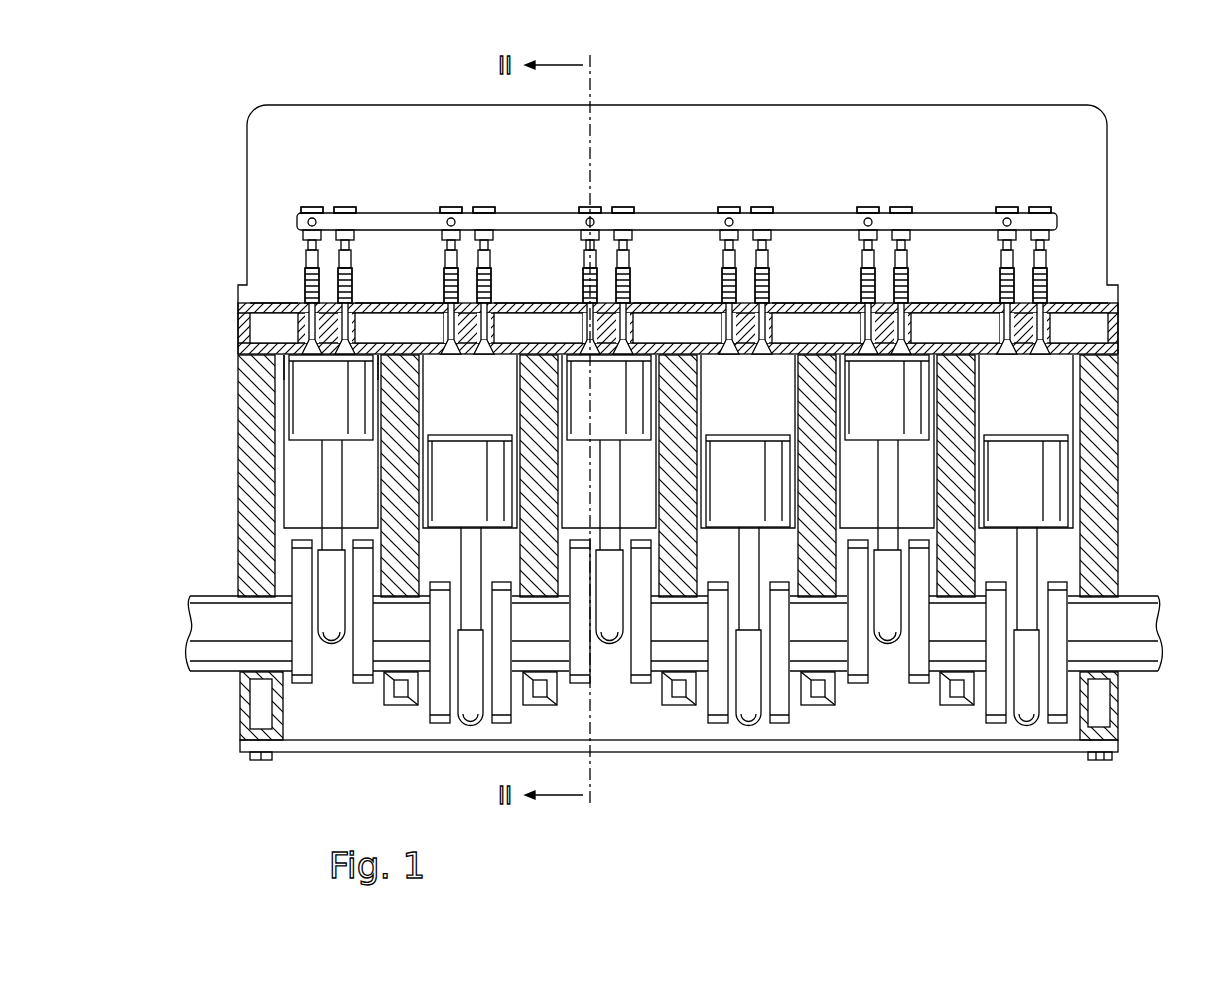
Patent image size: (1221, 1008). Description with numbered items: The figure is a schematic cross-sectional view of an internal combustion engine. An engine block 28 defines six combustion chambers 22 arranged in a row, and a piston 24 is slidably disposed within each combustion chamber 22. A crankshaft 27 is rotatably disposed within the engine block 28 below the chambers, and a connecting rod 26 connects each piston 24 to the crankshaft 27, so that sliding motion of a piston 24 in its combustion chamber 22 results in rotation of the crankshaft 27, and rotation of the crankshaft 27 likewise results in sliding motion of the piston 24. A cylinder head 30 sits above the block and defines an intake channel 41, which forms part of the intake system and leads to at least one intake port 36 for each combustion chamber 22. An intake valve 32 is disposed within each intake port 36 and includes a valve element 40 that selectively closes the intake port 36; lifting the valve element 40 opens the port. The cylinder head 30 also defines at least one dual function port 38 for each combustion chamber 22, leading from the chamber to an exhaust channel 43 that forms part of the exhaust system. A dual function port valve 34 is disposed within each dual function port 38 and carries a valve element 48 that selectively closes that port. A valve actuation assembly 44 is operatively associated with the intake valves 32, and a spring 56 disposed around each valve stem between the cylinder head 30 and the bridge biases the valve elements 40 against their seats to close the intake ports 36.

The combustion chamber 22 is at (343, 501).
The piston 24 is at (320, 432).
The connecting rod 26 is at (324, 513).
The crankshaft 27 is at (218, 648).
The engine block 28 is at (250, 364).
The cylinder head 30 is at (1118, 323).
The intake valve 32 is at (677, 280).
The dual function port valve 34 is at (1073, 285).
The intake port 36 is at (360, 366).
The dual function port 38 is at (316, 354).
The valve element 40 is at (343, 354).
The intake channel 41 is at (385, 339).
The exhaust channel 43 is at (525, 339).
The valve actuation assembly 44 is at (312, 207).
The valve element 48 is at (262, 326).
The spring 56 is at (305, 246).